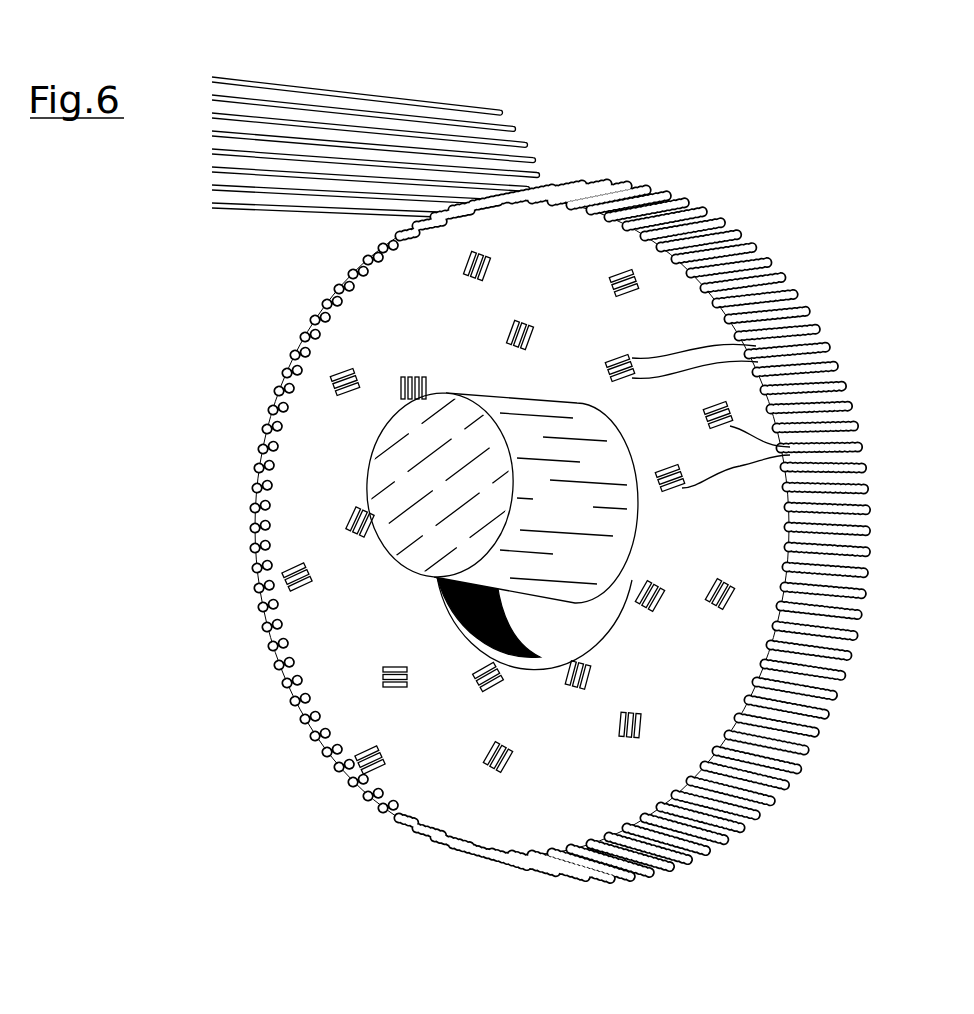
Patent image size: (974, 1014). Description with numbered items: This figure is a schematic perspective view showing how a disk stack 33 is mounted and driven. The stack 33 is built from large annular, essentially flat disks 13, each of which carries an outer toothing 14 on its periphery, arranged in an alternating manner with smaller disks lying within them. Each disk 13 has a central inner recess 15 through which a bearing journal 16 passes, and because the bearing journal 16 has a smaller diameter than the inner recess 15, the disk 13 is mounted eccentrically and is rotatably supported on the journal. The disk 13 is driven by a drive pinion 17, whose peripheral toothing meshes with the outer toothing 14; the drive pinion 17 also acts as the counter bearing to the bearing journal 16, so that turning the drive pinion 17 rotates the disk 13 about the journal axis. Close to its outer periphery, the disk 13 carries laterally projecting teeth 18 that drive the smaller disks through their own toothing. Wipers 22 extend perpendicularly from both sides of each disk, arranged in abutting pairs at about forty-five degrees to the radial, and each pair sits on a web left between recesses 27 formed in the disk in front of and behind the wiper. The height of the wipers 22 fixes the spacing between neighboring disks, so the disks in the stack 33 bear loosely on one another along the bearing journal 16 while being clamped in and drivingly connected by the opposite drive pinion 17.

The disk 13 is at (750, 514).
The outer toothing 14 is at (832, 442).
The inner recess 15 is at (608, 602).
The bearing journal 16 is at (572, 516).
The drive pinion 17 is at (297, 200).
The laterally projecting teeth 18 is at (705, 222).
The wipers 22 is at (802, 447).
The recess 27 is at (775, 357).
The stacks 33 is at (833, 283).